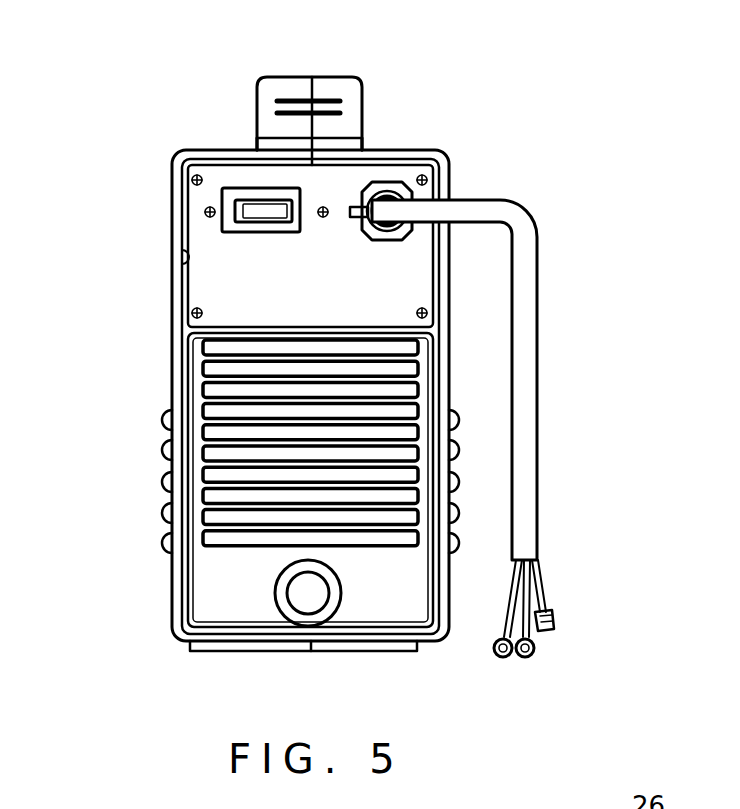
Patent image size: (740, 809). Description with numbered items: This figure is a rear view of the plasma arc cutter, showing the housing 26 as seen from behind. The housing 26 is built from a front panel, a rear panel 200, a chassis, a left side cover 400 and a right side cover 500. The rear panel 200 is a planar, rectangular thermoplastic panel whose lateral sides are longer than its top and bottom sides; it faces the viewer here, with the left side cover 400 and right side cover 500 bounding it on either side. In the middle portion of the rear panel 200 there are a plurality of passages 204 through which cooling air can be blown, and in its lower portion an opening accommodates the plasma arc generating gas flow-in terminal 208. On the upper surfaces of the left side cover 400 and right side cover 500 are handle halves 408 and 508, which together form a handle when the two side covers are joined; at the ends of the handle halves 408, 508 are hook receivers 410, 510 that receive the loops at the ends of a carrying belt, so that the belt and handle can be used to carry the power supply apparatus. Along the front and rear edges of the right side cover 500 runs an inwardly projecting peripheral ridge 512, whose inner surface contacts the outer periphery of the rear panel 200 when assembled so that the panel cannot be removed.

The housing 26 is at (494, 50).
The rear panel 200 is at (238, 613).
The passages 204 is at (210, 457).
The plasma arc generating gas flow-in terminal 208 is at (322, 597).
The left side cover 400 is at (458, 178).
The handle half 408 is at (338, 77).
The hook receiver 410 is at (333, 113).
The right side cover 500 is at (165, 209).
The handle half 508 is at (270, 123).
The hook receiver 510 is at (277, 102).
The peripheral ridge 512 is at (188, 258).